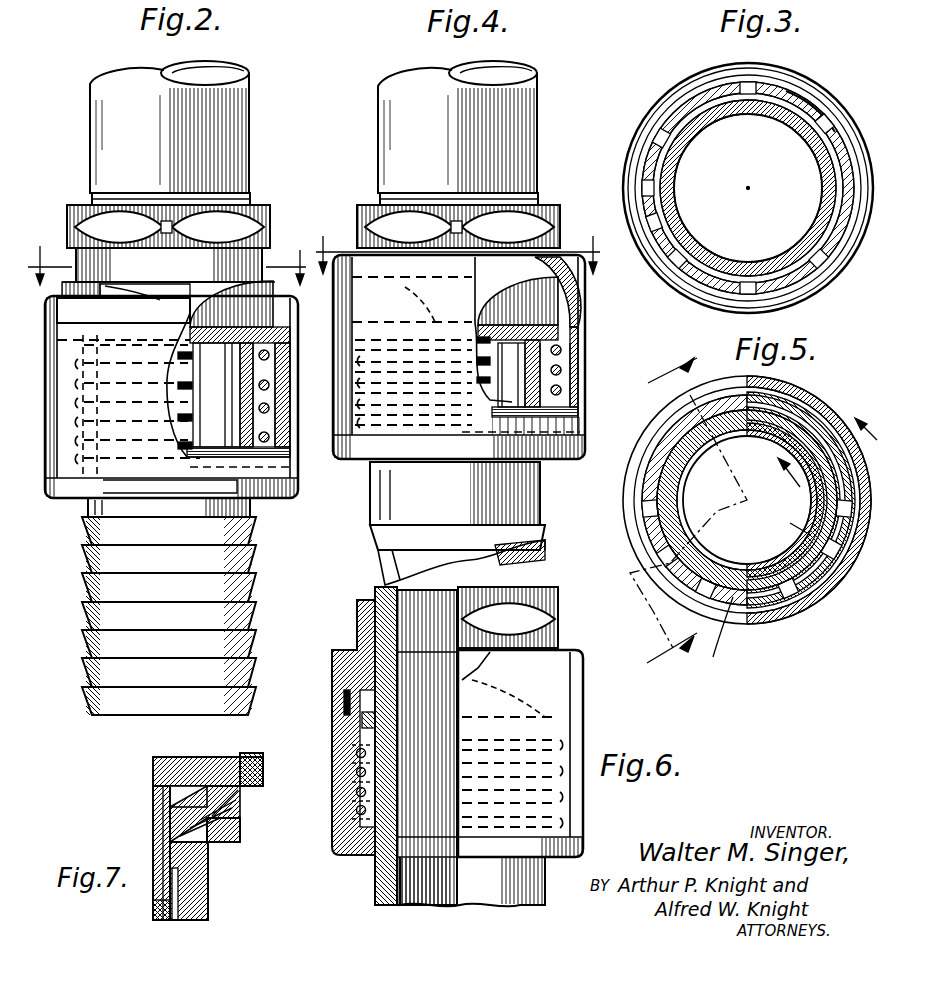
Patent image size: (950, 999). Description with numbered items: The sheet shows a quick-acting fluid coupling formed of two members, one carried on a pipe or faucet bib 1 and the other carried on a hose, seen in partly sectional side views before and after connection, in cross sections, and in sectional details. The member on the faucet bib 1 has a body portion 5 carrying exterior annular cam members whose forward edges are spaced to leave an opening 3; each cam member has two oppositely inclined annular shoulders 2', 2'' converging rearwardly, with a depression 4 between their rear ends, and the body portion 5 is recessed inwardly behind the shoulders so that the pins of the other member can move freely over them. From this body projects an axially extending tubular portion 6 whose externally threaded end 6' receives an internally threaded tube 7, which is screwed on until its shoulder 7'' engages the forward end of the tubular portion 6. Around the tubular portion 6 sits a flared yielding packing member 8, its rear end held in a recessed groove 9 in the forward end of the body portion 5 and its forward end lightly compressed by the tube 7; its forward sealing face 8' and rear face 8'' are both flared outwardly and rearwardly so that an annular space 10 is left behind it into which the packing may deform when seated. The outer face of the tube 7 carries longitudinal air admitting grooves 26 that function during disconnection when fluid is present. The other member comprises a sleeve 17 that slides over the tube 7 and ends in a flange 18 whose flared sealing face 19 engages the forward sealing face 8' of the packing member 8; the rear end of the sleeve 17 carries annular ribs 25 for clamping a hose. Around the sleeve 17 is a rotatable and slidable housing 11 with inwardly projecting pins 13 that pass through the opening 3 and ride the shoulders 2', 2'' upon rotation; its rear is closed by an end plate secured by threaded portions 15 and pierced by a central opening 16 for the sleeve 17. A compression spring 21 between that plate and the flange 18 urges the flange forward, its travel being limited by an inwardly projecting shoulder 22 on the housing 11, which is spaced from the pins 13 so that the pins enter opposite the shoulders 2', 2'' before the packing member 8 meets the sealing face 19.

In FIG. 2, the faucet bib 1 is at (170, 133).
In FIG. 4, the faucet bib 1 is at (458, 133).
In FIG. 5, the faucet bib 1 is at (718, 635).
In FIG. 3, the inclined annular shoulder 2' is at (748, 170).
In FIG. 3, the inclined annular shoulder 2'' is at (818, 97).
In FIG. 2, the opening 3 is at (167, 255).
In FIG. 3, the opening 3 is at (843, 123).
In FIG. 5, the opening 3 is at (657, 449).
In FIG. 2, the depression 4 is at (270, 285).
In FIG. 4, the depression 4 is at (572, 283).
In FIG. 3, the depression 4 is at (760, 84).
In FIG. 4, the body portion 5 is at (458, 245).
In FIG. 5, the body portion 5 is at (655, 525).
In FIG. 7, the tubular portion 6 is at (142, 853).
In FIG. 6, the tubular portion 6 is at (427, 747).
In FIG. 5, the tubular portion 6 is at (688, 508).
In FIG. 7, the externally threaded end 6' is at (208, 881).
In FIG. 6, the externally threaded end 6' is at (424, 778).
In FIG. 7, the tube 7 is at (165, 940).
In FIG. 6, the tube 7 is at (416, 746).
In FIG. 5, the tube 7 is at (769, 500).
In FIG. 7, the shoulder 7'' is at (130, 918).
In FIG. 2, the packing member 8 is at (231, 304).
In FIG. 7, the packing member 8 is at (216, 814).
In FIG. 4, the packing member 8 is at (518, 301).
In FIG. 6, the packing member 8 is at (332, 727).
In FIG. 7, the forward sealing face 8' is at (250, 795).
In FIG. 7, the rear face 8'' is at (130, 853).
In FIG. 7, the recessed groove 9 is at (247, 760).
In FIG. 6, the recessed groove 9 is at (344, 700).
In FIG. 7, the annular space 10 is at (183, 795).
In FIG. 2, the housing 11 is at (72, 410).
In FIG. 4, the housing 11 is at (585, 378).
In FIG. 3, the housing 11 is at (690, 273).
In FIG. 5, the housing 11 is at (822, 404).
In FIG. 2, the pins 13 is at (150, 308).
In FIG. 3, the pins 13 is at (655, 135).
In FIG. 5, the pins 13 is at (660, 552).
In FIG. 7, the threaded portions 15 is at (255, 822).
In FIG. 6, the threaded portions 15 is at (350, 810).
In FIG. 4, the central opening 16 is at (372, 470).
In FIG. 6, the central opening 16 is at (374, 858).
In FIG. 2, the sleeve 17 is at (252, 400).
In FIG. 7, the sleeve 17 is at (210, 878).
In FIG. 4, the sleeve 17 is at (455, 493).
In FIG. 6, the sleeve 17 is at (386, 900).
In FIG. 5, the sleeve 17 is at (840, 570).
In FIG. 2, the flange 18 is at (292, 345).
In FIG. 7, the flange 18 is at (240, 826).
In FIG. 4, the flange 18 is at (586, 348).
In FIG. 2, the sealing face 19 is at (220, 365).
In FIG. 7, the sealing face 19 is at (240, 840).
In FIG. 4, the sealing face 19 is at (586, 330).
In FIG. 2, the compression spring 21 is at (268, 420).
In FIG. 6, the compression spring 21 is at (355, 758).
In FIG. 2, the shoulder 22 is at (292, 330).
In FIG. 4, the shoulder 22 is at (586, 310).
In FIG. 2, the annular ribs 25 is at (88, 630).
In FIG. 4, the annular ribs 25 is at (395, 565).
In FIG. 2, the air admitting grooves 26 is at (235, 428).
In FIG. 7, the air admitting grooves 26 is at (209, 897).
In FIG. 5, the air admitting grooves 26 is at (786, 522).